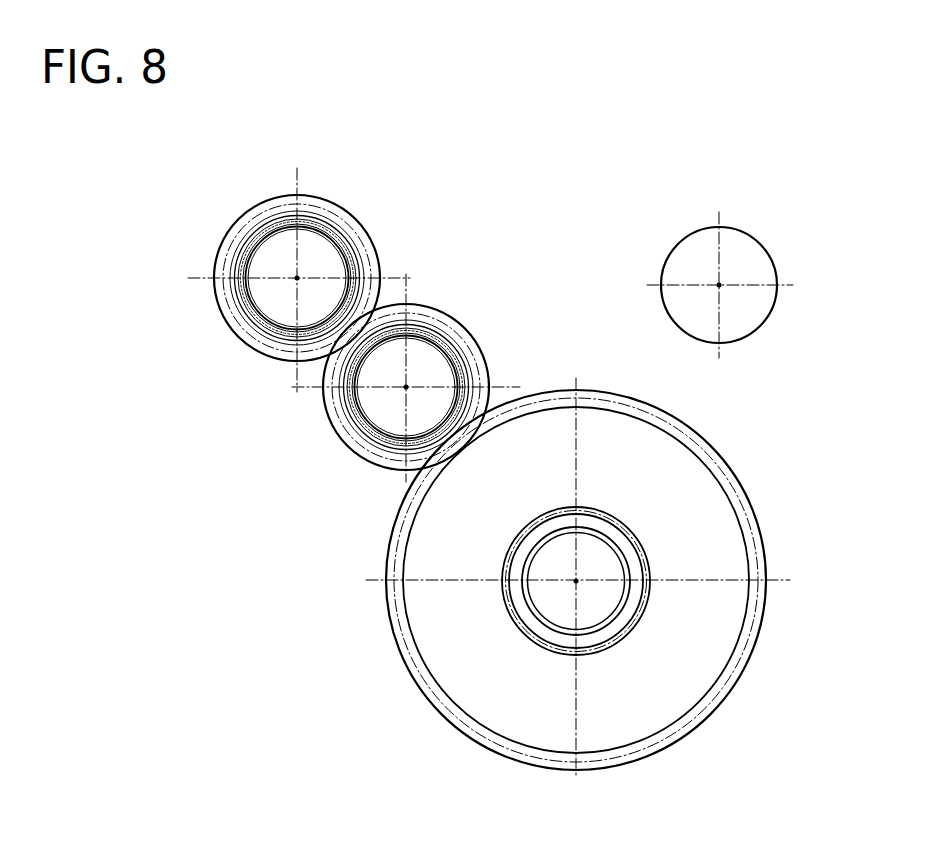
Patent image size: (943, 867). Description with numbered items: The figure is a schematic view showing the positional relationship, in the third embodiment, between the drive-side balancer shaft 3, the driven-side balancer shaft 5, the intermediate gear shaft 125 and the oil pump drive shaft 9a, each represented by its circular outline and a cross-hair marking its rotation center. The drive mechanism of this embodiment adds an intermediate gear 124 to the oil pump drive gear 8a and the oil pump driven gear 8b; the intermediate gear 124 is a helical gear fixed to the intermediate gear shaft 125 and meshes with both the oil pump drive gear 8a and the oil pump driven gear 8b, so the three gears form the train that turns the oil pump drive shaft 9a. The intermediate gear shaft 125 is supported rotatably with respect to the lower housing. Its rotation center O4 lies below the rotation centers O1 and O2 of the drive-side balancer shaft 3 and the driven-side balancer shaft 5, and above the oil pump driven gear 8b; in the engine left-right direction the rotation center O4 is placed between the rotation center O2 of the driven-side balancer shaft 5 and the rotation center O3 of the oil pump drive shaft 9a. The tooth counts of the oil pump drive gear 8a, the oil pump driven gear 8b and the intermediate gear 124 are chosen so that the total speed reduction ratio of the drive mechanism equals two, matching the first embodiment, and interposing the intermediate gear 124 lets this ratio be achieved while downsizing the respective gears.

The oil pump drive gear 8a is at (230, 228).
The driven-side balancer shaft 5 is at (310, 257).
The intermediate gear 124 is at (418, 303).
The intermediate gear shaft 125 is at (422, 363).
The drive-side balancer shaft 3 is at (747, 230).
The rotation center of the drive-side balancer shaft O1 is at (719, 285).
The rotation center of the driven-side balancer shaft O2 is at (296, 279).
The rotation center of the intermediate gear shaft O4 is at (405, 388).
The oil pump driven gear 8b is at (397, 642).
The oil pump drive shaft 9a is at (593, 554).
The rotation center of the oil pump drive shaft O3 is at (576, 581).